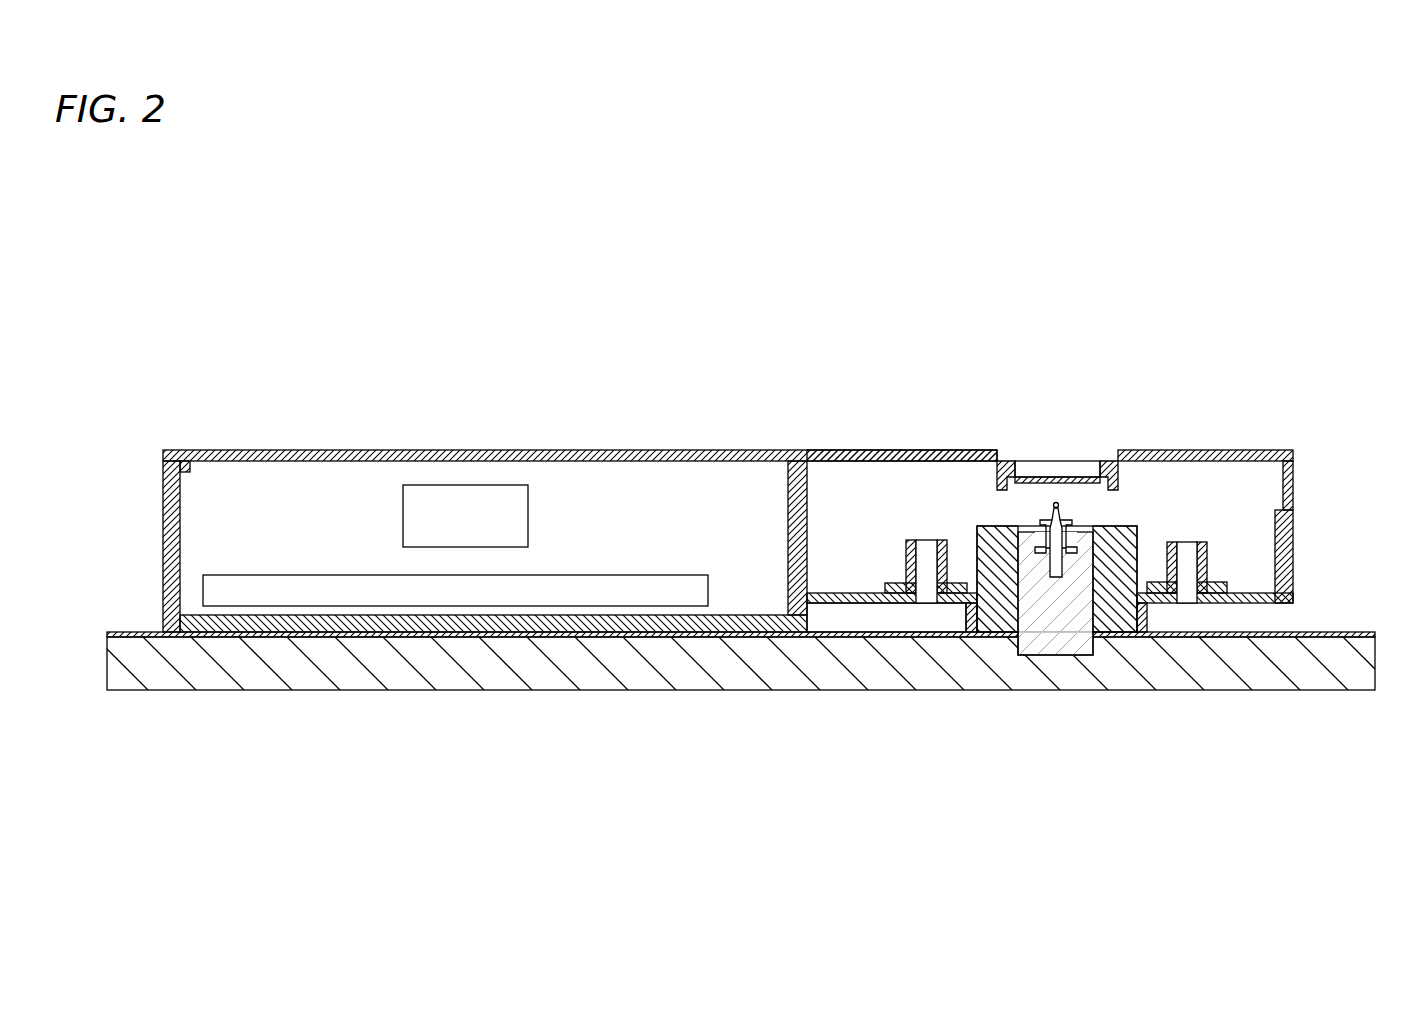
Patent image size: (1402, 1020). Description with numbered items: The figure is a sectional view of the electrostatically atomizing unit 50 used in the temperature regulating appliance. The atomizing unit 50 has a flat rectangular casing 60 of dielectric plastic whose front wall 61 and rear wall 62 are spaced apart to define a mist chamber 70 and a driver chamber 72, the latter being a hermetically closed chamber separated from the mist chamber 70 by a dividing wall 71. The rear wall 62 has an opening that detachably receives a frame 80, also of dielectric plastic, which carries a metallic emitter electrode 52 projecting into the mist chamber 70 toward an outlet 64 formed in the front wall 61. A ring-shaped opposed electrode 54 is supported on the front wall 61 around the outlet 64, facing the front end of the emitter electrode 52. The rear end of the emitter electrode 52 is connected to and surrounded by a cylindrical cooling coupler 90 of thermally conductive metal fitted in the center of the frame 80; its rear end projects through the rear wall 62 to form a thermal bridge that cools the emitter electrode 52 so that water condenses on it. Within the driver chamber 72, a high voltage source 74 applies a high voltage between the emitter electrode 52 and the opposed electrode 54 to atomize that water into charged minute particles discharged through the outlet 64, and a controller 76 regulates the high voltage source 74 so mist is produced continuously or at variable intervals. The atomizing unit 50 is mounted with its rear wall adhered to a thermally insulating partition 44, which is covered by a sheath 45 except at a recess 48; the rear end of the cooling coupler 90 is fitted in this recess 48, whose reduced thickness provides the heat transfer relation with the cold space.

The partition 44 is at (1250, 677).
The sheath 45 is at (914, 634).
The recess 48 is at (1032, 645).
The atomizing unit 50 is at (168, 443).
The emitter electrode 52 is at (1062, 508).
The opposed electrode 54 is at (1033, 475).
The casing 60 is at (162, 498).
The front wall 61 is at (833, 450).
The rear wall 62 is at (685, 625).
The outlet 64 is at (1062, 460).
The mist chamber 70 is at (1247, 497).
The dividing wall 71 is at (787, 510).
The driver chamber 72 is at (583, 492).
The high voltage source 74 is at (472, 495).
The controller 76 is at (385, 587).
The frame 80 is at (990, 545).
The cooling coupler 90 is at (1080, 638).